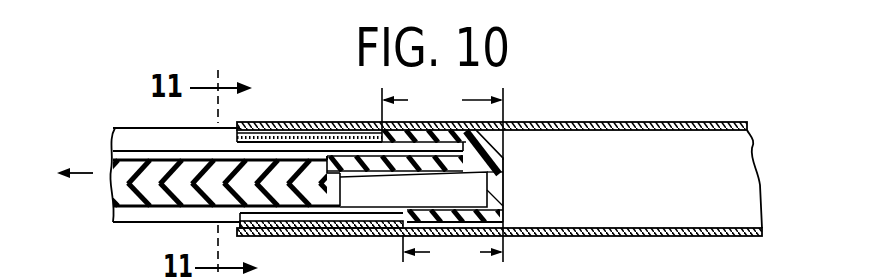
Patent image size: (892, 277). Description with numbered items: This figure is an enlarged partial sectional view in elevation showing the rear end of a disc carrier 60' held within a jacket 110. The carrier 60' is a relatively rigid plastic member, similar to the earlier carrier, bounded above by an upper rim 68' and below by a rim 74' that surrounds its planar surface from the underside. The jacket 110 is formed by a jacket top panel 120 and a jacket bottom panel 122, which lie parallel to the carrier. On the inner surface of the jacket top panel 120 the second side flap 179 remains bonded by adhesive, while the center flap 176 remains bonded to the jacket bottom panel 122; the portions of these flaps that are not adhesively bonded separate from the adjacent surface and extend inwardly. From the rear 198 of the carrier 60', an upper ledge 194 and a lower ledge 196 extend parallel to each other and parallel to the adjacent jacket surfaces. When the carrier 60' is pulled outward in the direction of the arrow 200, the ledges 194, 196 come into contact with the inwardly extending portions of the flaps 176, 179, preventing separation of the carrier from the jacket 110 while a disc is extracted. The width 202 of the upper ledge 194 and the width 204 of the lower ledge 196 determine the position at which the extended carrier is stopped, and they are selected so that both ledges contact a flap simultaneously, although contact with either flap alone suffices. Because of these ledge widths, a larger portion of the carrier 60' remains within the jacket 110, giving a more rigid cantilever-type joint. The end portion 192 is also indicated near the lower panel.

The disc carrier 60' is at (267, 152).
The upper rim 68' is at (288, 124).
The rim 74' is at (167, 249).
The jacket 110 is at (763, 135).
The jacket top panel 120 is at (638, 122).
The jacket bottom panel 122 is at (668, 237).
The center flap 176 is at (238, 220).
The second side flap 179 is at (328, 130).
The end portion 192 is at (549, 271).
The upper ledge 194 is at (424, 144).
The lower ledge 196 is at (465, 207).
The rear of the carrier 198 is at (497, 177).
The arrow 200 is at (83, 174).
The width of the upper ledge 202 is at (442, 124).
The width of the lower ledge 204 is at (453, 245).